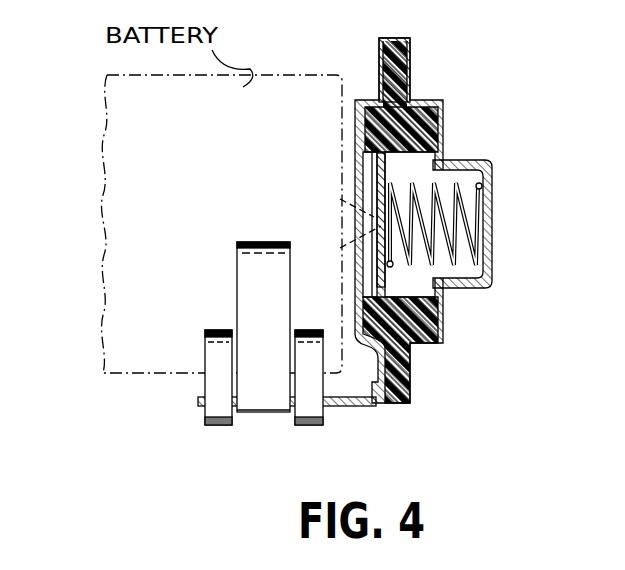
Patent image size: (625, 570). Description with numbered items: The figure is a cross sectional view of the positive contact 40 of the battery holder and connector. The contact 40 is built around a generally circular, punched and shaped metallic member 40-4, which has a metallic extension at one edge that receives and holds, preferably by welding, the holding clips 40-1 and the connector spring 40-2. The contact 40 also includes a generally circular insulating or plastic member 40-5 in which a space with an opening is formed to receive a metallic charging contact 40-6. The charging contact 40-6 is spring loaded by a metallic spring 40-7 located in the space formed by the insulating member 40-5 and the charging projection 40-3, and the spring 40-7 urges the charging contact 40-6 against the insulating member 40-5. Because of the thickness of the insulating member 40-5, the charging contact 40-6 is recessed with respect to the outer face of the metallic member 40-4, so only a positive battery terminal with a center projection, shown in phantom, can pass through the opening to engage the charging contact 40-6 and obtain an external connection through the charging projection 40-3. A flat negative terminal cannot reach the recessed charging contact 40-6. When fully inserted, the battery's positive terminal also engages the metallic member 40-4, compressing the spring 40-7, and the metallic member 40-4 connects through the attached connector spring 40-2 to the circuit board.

The positive contact 40 is at (435, 79).
The holding clips 40-1 is at (218, 330).
The connector spring 40-2 is at (262, 243).
The charging projection 40-3 is at (492, 213).
The metallic member 40-4 is at (379, 50).
The insulating member 40-5 is at (443, 107).
The charging contact 40-6 is at (385, 183).
The spring 40-7 is at (492, 279).